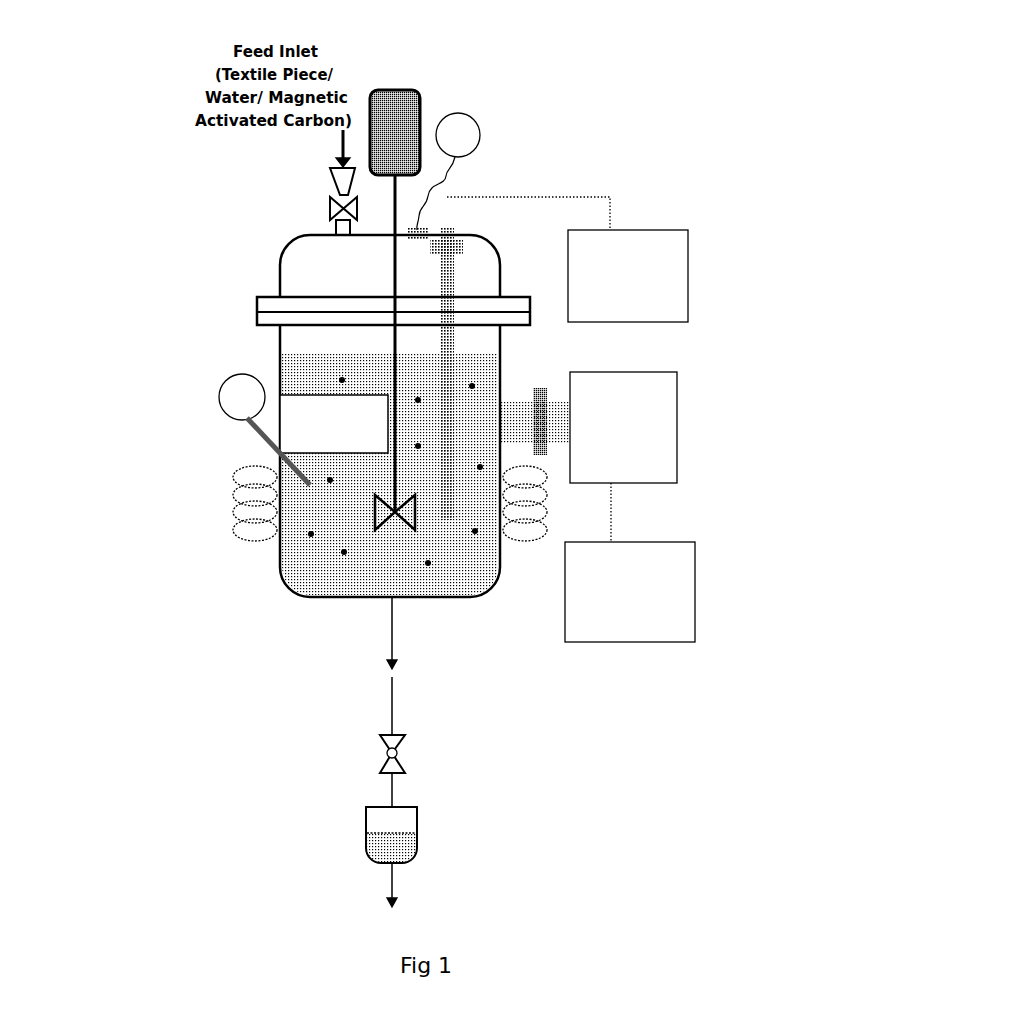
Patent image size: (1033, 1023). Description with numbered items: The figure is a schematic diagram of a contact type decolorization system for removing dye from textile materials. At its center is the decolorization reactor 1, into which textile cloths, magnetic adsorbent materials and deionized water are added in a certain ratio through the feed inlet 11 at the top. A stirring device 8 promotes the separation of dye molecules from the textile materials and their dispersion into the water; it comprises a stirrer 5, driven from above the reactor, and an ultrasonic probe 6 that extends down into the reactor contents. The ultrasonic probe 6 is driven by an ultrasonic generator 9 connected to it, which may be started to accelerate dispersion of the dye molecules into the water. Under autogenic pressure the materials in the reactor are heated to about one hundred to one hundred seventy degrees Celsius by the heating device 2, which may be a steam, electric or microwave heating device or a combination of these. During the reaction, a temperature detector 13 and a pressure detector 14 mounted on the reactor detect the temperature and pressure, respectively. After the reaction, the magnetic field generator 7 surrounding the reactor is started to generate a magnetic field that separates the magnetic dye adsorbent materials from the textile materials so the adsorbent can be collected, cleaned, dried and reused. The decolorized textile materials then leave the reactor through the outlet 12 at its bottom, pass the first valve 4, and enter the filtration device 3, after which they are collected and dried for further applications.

The decolorization reactor 1 is at (500, 348).
The heating device 2 is at (677, 467).
The filtration device 3 is at (420, 845).
The first valve 4 is at (407, 753).
The stirrer 5 is at (405, 88).
The ultrasonic probe 6 is at (465, 240).
The magnetic field generator 7 is at (233, 498).
The stirring device 8 is at (452, 240).
The ultrasonic generator 9 is at (690, 272).
The feed inlet 11 is at (330, 183).
The outlet 12 is at (397, 600).
The temperature detector 13 is at (218, 396).
The pressure detector 14 is at (482, 134).